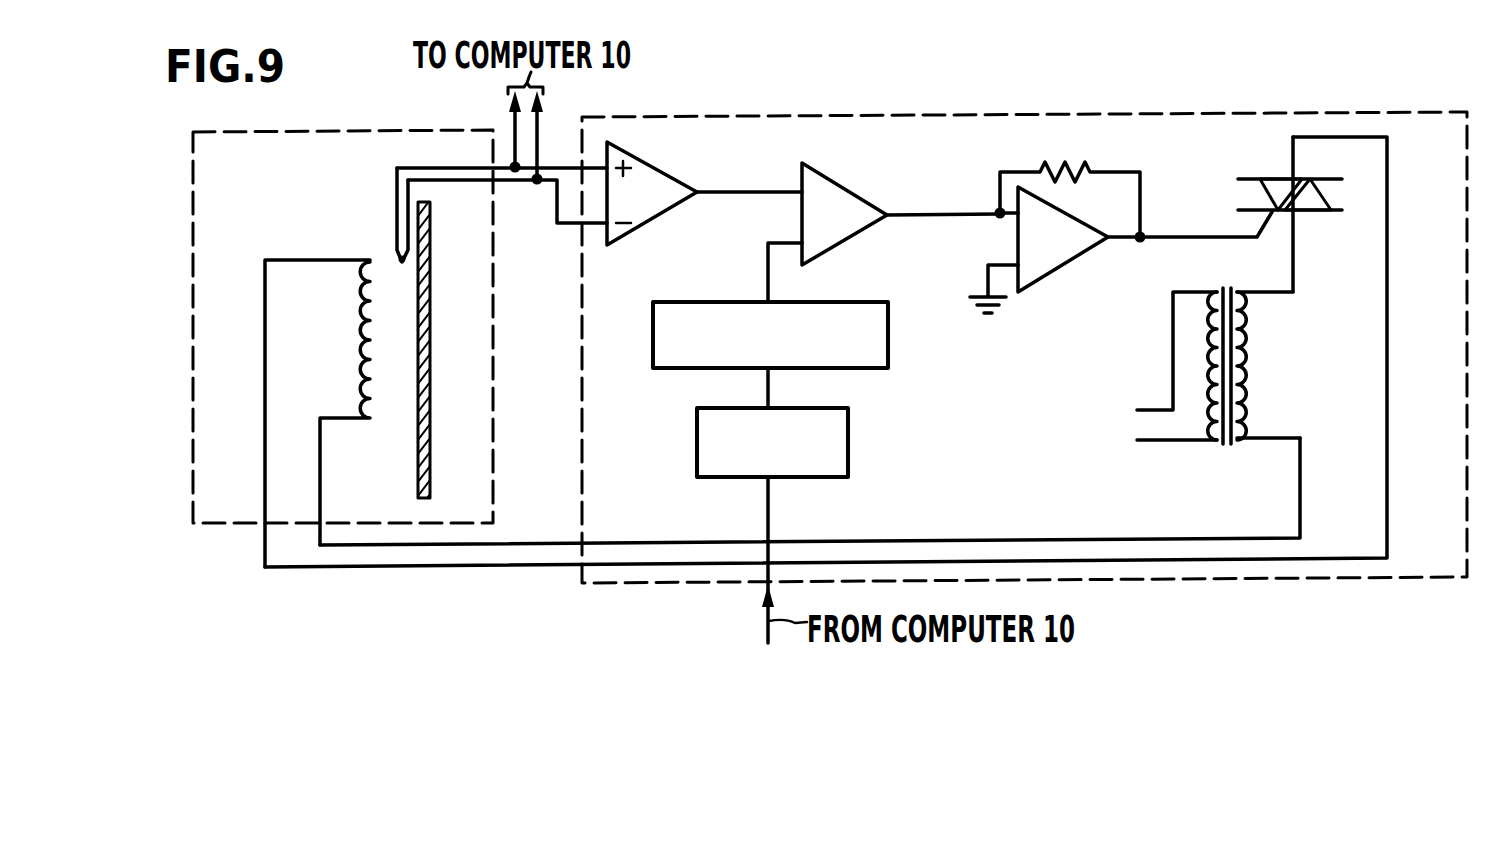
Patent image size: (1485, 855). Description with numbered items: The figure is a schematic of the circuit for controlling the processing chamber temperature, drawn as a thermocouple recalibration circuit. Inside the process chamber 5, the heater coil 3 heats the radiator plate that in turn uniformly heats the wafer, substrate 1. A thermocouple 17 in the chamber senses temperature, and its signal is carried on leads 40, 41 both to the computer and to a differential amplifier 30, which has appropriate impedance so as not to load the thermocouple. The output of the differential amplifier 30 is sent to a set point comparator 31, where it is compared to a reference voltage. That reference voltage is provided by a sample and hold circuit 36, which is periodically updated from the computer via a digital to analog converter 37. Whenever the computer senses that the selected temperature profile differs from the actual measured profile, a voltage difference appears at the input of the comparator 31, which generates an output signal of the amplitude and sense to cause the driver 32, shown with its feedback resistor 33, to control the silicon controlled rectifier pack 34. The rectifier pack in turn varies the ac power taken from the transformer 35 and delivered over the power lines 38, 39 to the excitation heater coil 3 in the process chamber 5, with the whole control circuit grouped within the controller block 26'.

The substrate 1 is at (418, 486).
The heater coil 3 is at (363, 330).
The process chamber 5 is at (193, 165).
The thermocouple 17 is at (398, 262).
The temperature controller 26' is at (1024, 318).
The differential amplifier 30 is at (675, 177).
The set point comparator 31 is at (870, 201).
The driver 32 is at (1085, 263).
The feedback resistor 33 is at (1068, 165).
The SCR pack 34 is at (1268, 179).
The transformer 35 is at (1238, 285).
The sample and hold circuit 36 is at (888, 340).
The digital to analog converter 37 is at (848, 445).
The heater power line 38 is at (1193, 537).
The heater power return line 39 is at (1328, 558).
The thermocouple positive lead 40 is at (553, 164).
The thermocouple negative lead 41 is at (557, 210).